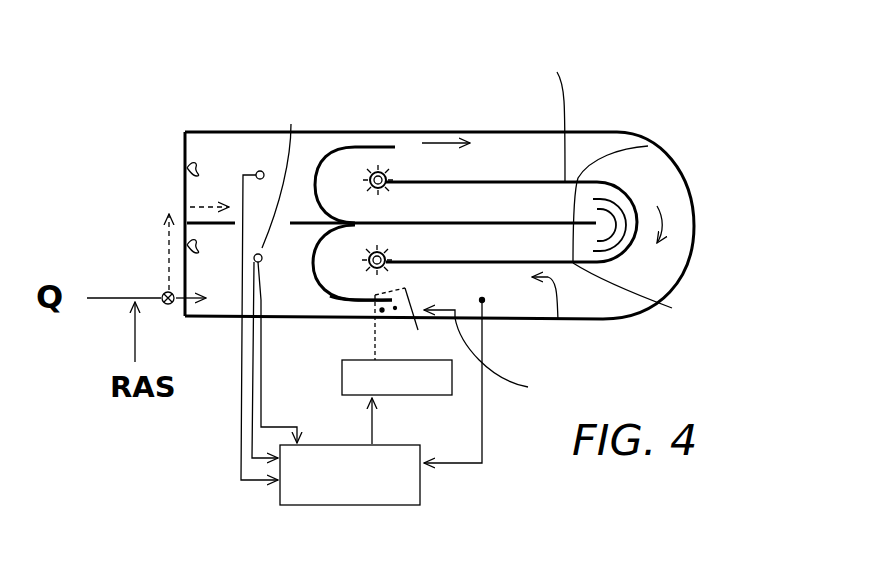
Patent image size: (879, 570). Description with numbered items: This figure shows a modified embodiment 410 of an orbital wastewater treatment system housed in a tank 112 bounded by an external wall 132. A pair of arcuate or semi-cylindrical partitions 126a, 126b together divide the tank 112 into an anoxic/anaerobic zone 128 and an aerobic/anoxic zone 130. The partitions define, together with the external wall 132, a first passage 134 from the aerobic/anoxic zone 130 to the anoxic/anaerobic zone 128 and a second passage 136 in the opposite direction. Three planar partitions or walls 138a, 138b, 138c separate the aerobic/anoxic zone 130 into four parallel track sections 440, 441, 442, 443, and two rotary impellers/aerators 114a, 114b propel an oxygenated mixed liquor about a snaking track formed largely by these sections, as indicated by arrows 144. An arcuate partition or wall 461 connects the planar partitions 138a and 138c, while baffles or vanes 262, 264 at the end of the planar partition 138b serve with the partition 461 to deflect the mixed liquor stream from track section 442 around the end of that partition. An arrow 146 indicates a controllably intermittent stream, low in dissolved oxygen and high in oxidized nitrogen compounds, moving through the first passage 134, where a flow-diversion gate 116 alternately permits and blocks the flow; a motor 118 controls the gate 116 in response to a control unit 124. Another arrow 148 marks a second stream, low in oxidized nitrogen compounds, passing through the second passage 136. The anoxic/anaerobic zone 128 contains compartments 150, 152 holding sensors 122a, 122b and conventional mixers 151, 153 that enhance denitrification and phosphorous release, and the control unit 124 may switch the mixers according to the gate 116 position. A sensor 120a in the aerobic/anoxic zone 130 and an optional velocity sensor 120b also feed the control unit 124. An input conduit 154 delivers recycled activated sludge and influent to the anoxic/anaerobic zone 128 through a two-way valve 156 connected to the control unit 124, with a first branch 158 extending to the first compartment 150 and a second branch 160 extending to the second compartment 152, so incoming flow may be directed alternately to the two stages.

The tank 112 is at (619, 131).
The external wall 132 is at (192, 128).
The modified embodiment of the orbital wastewater treatment system 410 is at (592, 97).
The aerobic/anoxic zone 130 is at (620, 309).
The arcuate partition 126b is at (342, 146).
The arcuate partition 126a is at (318, 277).
The first passage 134 is at (355, 300).
The second passage 136 is at (398, 130).
The arrow 148 is at (448, 142).
The track section 440 is at (545, 177).
The track section 441 is at (562, 217).
The track section 442 is at (562, 257).
The track section 443 is at (466, 290).
The compartment 152 is at (247, 158).
The compartment 150 is at (233, 285).
The vane 262 is at (616, 210).
The vane 264 is at (623, 242).
The arcuate partition 461 is at (626, 258).
The planar partition 138a is at (548, 114).
The planar partition 138b is at (648, 146).
The planar partition 138c is at (650, 299).
The rotary impeller/aerator 114a is at (372, 168).
The rotary impeller/aerator 114b is at (365, 270).
The arrows 144 is at (563, 320).
The mixer 153 is at (187, 168).
The mixer 151 is at (186, 248).
The second branch 160 is at (166, 218).
The first branch 158 is at (182, 314).
The two-way valve 156 is at (163, 304).
The input conduit 154 is at (140, 294).
The sensor 122b is at (260, 171).
The sensor 122a is at (295, 278).
The anoxic/anaerobic zone 128 is at (303, 274).
The sensor 120a is at (484, 302).
The arrow 146 is at (516, 361).
The velocity sensor 120b is at (392, 324).
The gate 116 is at (428, 322).
The motor 118 is at (350, 397).
The control unit 124 is at (417, 490).